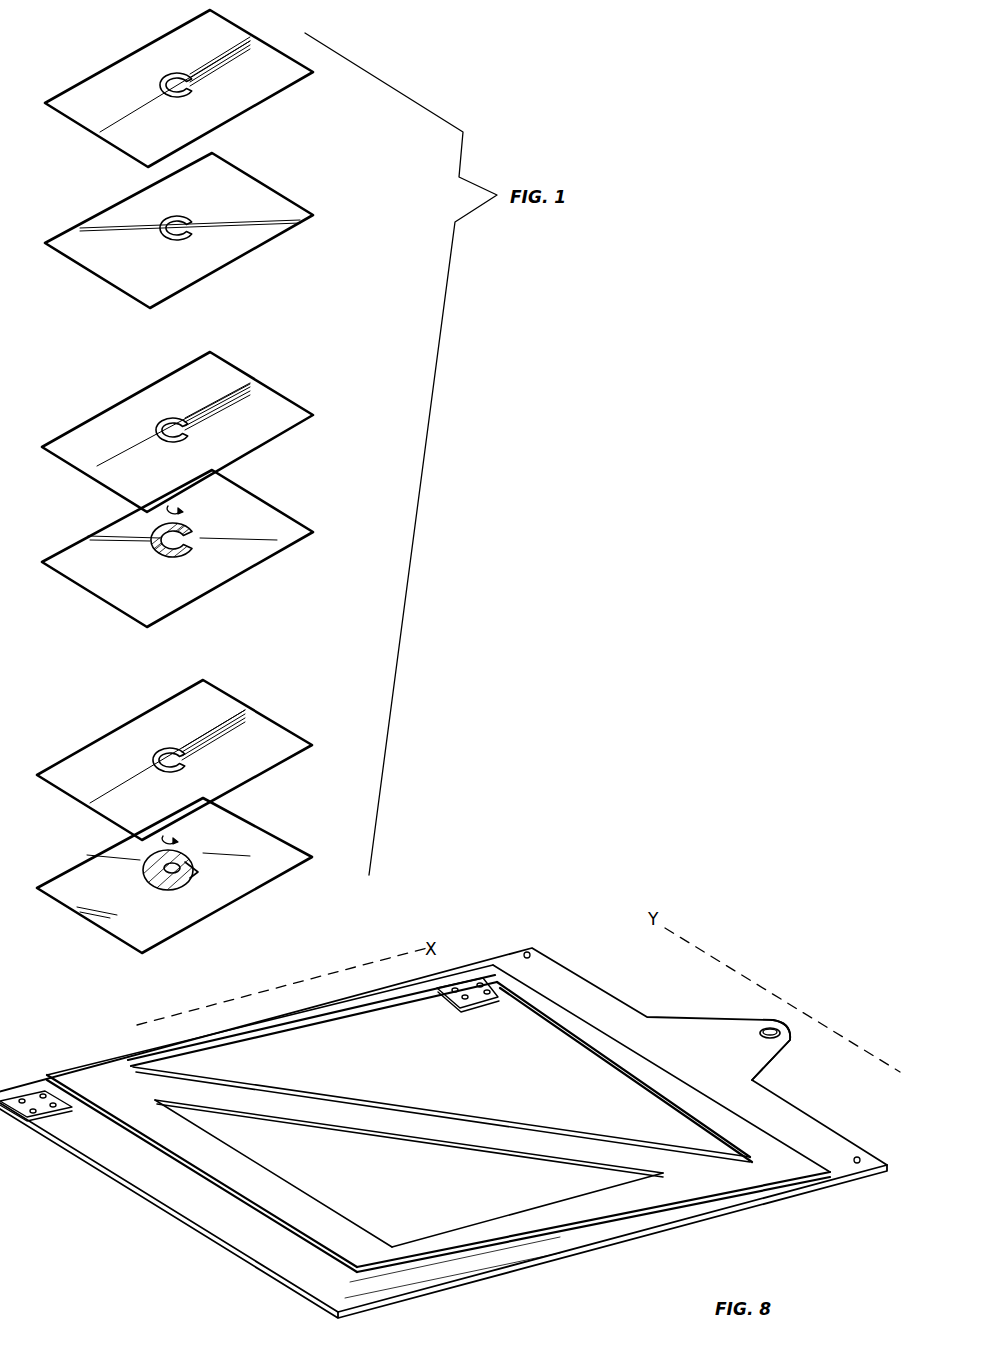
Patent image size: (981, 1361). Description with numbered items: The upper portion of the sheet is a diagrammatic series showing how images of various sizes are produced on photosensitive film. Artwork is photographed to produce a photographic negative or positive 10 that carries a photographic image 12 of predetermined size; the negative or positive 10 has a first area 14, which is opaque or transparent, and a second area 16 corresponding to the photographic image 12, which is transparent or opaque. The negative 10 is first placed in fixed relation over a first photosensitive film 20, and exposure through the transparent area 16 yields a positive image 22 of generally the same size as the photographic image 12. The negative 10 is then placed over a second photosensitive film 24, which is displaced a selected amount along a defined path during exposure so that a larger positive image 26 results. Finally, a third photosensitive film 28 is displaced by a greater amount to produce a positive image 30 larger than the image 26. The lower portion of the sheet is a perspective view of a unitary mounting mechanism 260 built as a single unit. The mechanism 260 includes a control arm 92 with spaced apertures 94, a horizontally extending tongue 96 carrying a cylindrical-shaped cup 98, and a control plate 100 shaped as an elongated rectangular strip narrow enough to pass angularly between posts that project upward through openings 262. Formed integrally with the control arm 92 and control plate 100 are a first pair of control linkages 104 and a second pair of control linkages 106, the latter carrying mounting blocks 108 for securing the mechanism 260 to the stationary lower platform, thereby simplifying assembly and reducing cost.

In FIG. 1, the photographic negative or positive 10 is at (303, 82).
In FIG. 1, the photographic image 12 is at (202, 105).
In FIG. 1, the first area 14 is at (223, 43).
In FIG. 1, the second area 16 is at (163, 80).
In FIG. 1, the first photosensitive film 20 is at (270, 185).
In FIG. 1, the positive image 22 is at (198, 236).
In FIG. 1, the second photosensitive film 24 is at (277, 503).
In FIG. 1, the positive image 26 is at (200, 548).
In FIG. 1, the third photosensitive film 28 is at (277, 833).
In FIG. 1, the positive image 30 is at (190, 880).
In FIG. 8, the control arm 92 is at (607, 993).
In FIG. 8, the apertures 94 is at (526, 952).
In FIG. 8, the tongue 96 is at (728, 1038).
In FIG. 8, the cylindrical-shaped cup 98 is at (781, 1039).
In FIG. 8, the control plate 100 is at (463, 1123).
In FIG. 8, the first pair of control linkages 104 is at (360, 1007).
In FIG. 8, the second pair of control linkages 106 is at (637, 1090).
In FIG. 8, the mounting blocks 108 is at (473, 1007).
In FIG. 8, the mounting mechanism 260 is at (613, 938).
In FIG. 8, the openings 262 is at (432, 1087).